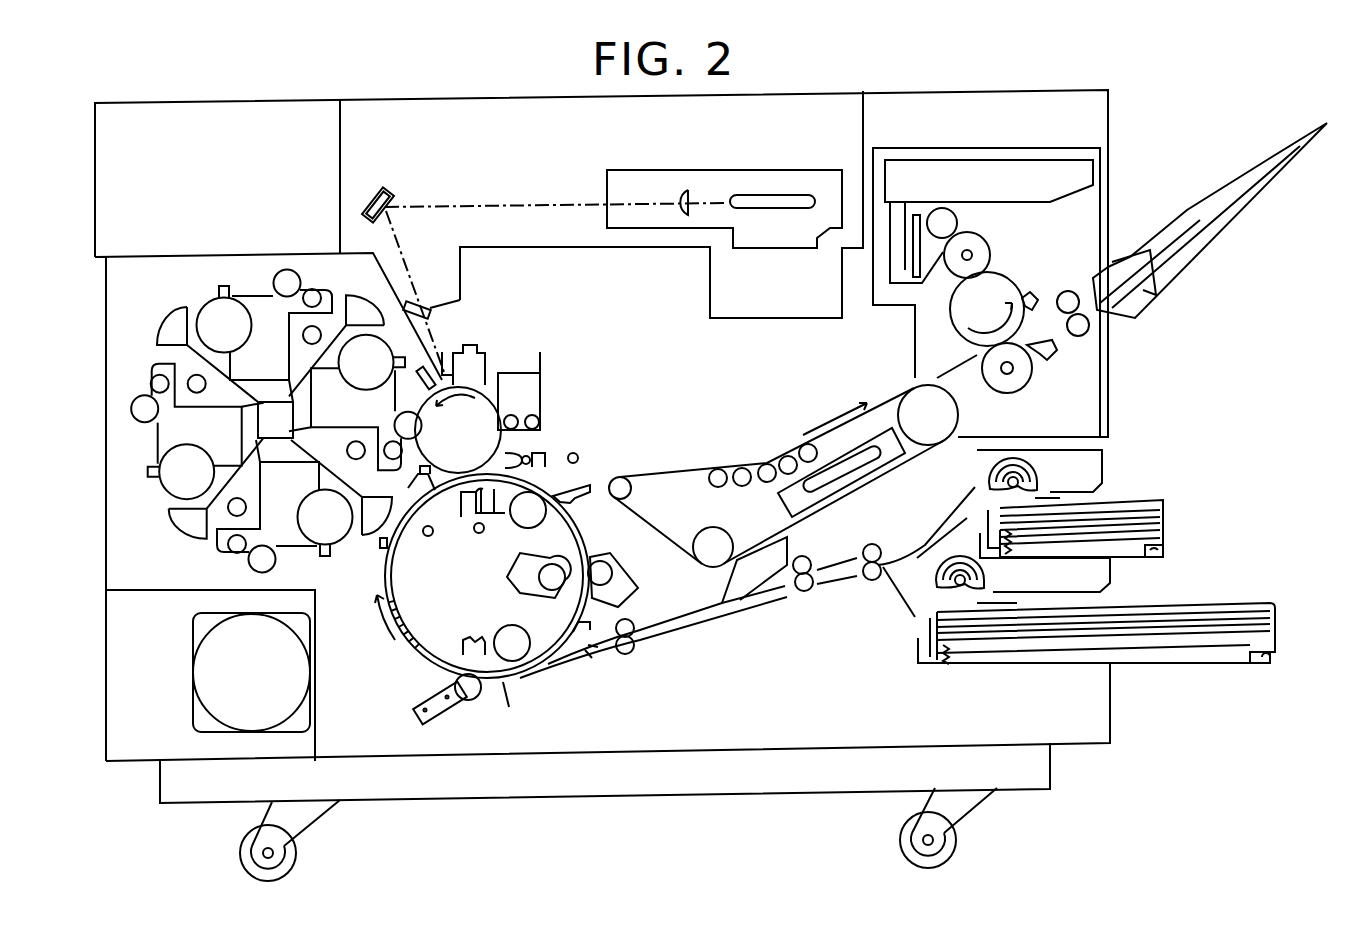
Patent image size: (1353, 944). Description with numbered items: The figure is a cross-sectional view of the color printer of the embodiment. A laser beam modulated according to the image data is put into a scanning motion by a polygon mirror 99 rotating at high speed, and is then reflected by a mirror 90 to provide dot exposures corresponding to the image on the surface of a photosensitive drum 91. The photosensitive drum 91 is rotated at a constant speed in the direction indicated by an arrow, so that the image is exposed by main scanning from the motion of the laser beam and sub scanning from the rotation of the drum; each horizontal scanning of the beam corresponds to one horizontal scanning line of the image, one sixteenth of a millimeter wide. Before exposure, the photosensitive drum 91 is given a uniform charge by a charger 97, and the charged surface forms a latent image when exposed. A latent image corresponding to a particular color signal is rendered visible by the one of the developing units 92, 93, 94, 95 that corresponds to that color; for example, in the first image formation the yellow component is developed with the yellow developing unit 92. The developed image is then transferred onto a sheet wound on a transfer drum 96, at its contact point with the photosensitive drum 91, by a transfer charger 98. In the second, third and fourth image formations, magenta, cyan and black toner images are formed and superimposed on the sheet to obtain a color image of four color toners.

The mirror 90 is at (386, 197).
The photosensitive drum 91 is at (470, 416).
The yellow developing unit 92 is at (383, 320).
The developing unit 93 is at (338, 543).
The developing unit 94 is at (165, 500).
The developing unit 95 is at (212, 307).
The transfer drum 96 is at (427, 607).
The charger 97 is at (476, 350).
The transfer charger 98 is at (463, 517).
The polygon mirror 99 is at (771, 195).